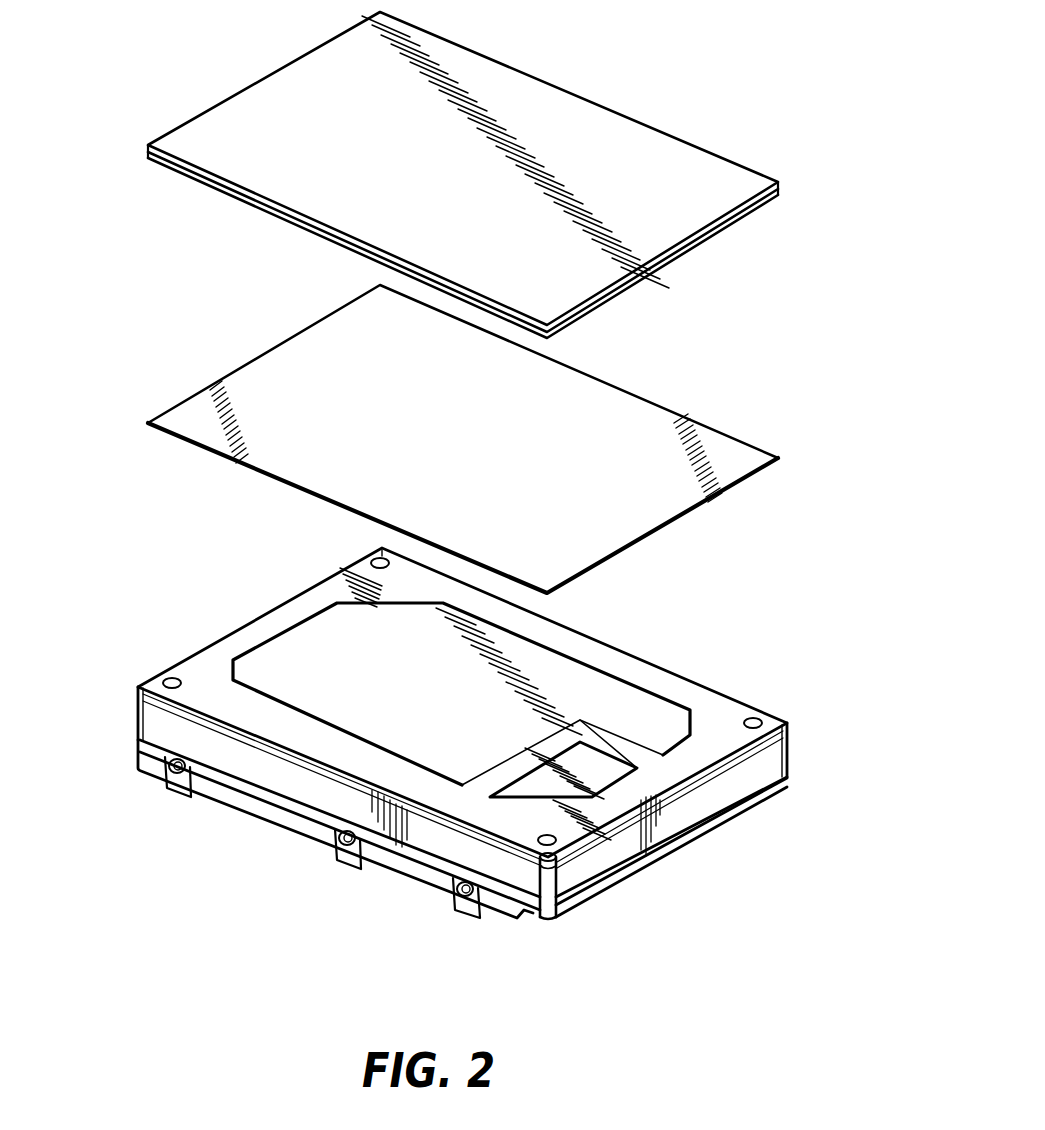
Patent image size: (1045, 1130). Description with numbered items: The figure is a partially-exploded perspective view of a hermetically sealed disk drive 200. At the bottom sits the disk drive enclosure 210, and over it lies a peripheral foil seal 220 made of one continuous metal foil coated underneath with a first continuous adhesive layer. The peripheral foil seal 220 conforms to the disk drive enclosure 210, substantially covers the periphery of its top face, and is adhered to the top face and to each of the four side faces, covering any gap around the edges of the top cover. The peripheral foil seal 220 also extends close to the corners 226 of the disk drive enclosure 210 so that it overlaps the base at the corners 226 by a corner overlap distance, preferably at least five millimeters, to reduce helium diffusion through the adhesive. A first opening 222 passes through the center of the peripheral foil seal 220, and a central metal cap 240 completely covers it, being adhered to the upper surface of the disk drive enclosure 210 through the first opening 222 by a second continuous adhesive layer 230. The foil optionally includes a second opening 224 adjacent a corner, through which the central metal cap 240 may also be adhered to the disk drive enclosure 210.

The disk drive 200 is at (706, 95).
The disk drive enclosure 210 is at (307, 830).
The peripheral foil seal 220 is at (200, 658).
The first opening 222 is at (327, 702).
The second opening 224 is at (752, 715).
The corners 226 is at (378, 552).
The second continuous adhesive layer 230 is at (207, 398).
The central metal cap 240 is at (265, 90).